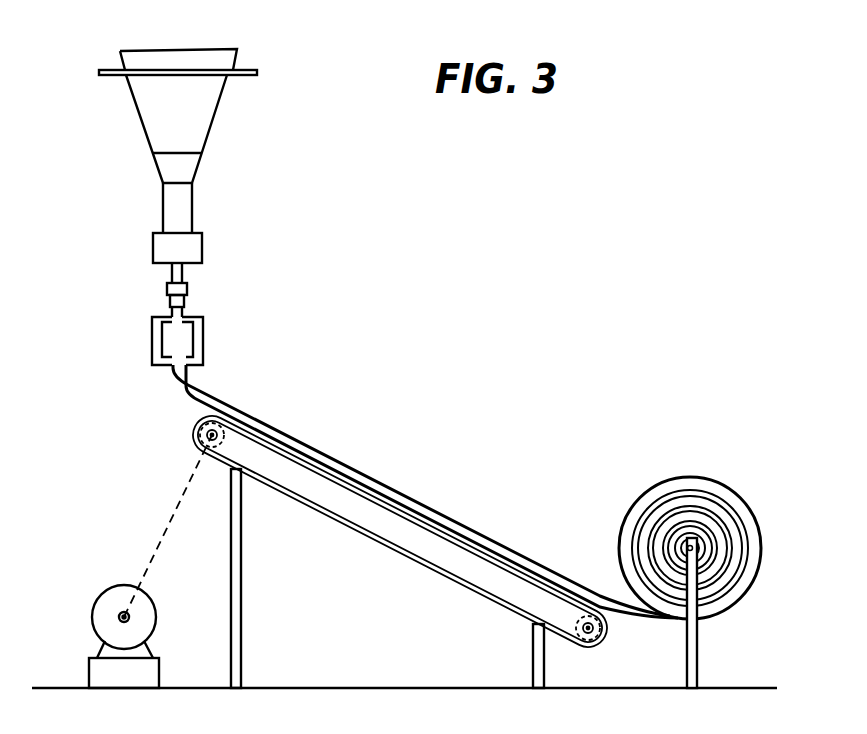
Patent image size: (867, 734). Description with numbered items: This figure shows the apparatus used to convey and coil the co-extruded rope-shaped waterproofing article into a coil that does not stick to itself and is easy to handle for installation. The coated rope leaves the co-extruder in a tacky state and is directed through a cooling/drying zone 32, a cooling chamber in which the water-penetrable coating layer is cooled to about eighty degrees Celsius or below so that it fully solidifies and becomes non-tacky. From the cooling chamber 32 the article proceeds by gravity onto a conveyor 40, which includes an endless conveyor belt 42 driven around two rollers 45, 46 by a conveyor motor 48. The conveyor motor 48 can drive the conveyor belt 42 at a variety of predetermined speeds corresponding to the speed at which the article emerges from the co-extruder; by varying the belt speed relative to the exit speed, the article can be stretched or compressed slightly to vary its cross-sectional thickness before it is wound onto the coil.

The cooling/drying zone 32 is at (152, 336).
The conveyor 40 is at (394, 512).
The endless conveyor belt 42 is at (375, 543).
The roller 45 is at (203, 432).
The roller 46 is at (597, 636).
The conveyor motor 48 is at (110, 598).